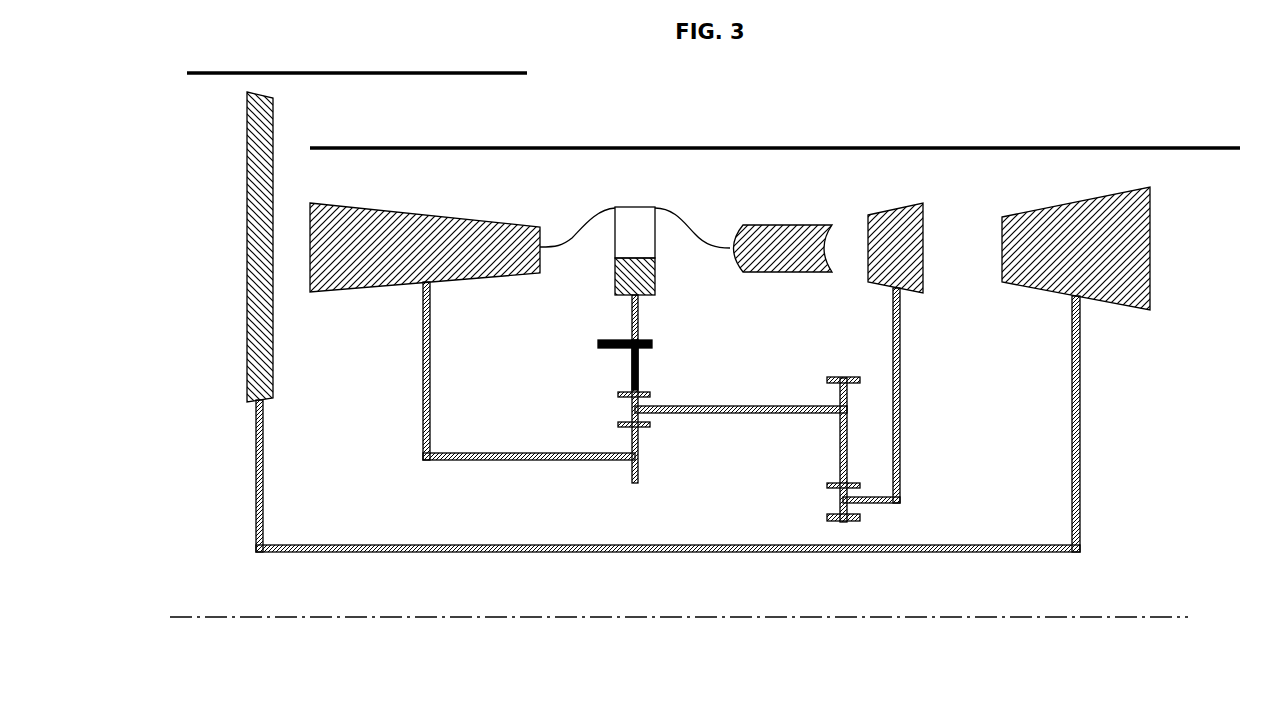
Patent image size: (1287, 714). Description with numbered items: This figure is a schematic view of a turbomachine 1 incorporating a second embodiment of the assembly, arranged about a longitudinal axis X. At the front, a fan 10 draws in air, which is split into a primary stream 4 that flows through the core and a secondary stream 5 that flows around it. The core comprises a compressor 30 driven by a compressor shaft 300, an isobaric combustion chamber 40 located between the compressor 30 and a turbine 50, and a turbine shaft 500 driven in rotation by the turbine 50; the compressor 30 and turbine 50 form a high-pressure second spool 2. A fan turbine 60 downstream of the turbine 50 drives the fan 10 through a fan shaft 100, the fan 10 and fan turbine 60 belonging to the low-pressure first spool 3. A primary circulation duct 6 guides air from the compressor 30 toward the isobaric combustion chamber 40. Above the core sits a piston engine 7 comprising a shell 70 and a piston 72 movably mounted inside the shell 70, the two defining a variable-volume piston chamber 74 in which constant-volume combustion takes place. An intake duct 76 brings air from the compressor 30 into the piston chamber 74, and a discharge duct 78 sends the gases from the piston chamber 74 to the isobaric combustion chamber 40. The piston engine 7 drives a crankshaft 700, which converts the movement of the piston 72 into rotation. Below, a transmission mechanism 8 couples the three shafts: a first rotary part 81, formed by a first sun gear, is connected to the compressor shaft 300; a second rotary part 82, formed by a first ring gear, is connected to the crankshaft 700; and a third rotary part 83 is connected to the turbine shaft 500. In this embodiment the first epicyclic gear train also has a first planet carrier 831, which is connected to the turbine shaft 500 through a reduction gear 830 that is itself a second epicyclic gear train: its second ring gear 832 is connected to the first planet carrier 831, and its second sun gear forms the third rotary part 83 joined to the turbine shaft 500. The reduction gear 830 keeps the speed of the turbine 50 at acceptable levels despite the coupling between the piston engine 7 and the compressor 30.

The turbomachine 1 is at (597, 652).
The second spool 2 is at (936, 418).
The first spool 3 is at (1103, 438).
The primary stream 4 is at (522, 368).
The secondary stream 5 is at (420, 123).
The primary circulation duct 6 is at (627, 190).
The piston engine 7 is at (662, 308).
The transmission mechanism 8 is at (702, 427).
The fan 10 is at (251, 255).
The compressor 30 is at (416, 256).
The isobaric combustion chamber 40 is at (767, 256).
The turbine 50 is at (885, 255).
The fan turbine 60 is at (1067, 255).
The shell 70 is at (655, 233).
The piston 72 is at (648, 277).
The variable-volume piston chamber 74 is at (625, 241).
The intake duct 76 is at (570, 226).
The discharge duct 78 is at (700, 231).
The first rotary part 81 is at (622, 460).
The second rotary part 82 is at (642, 374).
The third rotary part 83 is at (842, 500).
The fan shaft 100 is at (450, 545).
The compressor shaft 300 is at (518, 453).
The turbine shaft 500 is at (900, 388).
The crankshaft 700 is at (632, 322).
The reduction gear 830 is at (812, 392).
The first planet carrier 831 is at (632, 412).
The second ring gear 832 is at (842, 377).
The longitudinal axis X is at (183, 617).